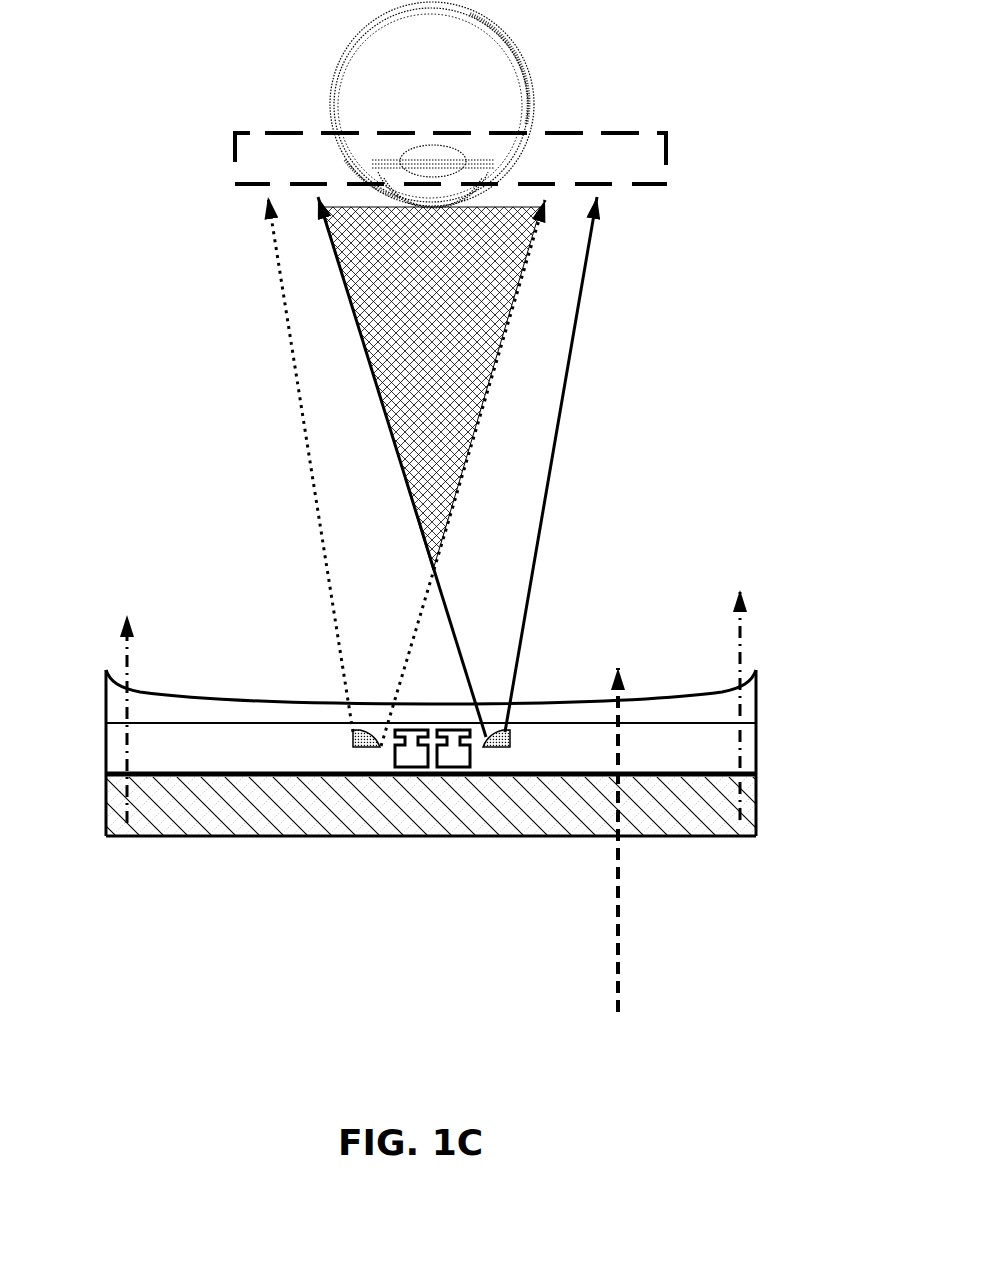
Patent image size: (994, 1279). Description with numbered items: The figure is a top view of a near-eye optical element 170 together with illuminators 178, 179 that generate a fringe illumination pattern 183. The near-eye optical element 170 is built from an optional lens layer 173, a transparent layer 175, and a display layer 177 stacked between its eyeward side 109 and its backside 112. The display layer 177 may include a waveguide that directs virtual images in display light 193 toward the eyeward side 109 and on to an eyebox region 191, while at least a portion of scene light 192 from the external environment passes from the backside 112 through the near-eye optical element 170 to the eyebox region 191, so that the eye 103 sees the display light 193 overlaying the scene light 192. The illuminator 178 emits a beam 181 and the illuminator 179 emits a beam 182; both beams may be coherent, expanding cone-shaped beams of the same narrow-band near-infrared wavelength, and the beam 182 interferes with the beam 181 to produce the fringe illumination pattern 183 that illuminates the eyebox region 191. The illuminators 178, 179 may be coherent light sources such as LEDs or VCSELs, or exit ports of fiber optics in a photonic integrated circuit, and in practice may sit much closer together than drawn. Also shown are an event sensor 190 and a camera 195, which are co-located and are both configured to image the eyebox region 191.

The eye 103 is at (522, 72).
The eyebox region 191 is at (670, 138).
The fringe illumination pattern 183 is at (443, 305).
The beam 181 is at (433, 575).
The beam 182 is at (532, 575).
The eyeward side 109 is at (661, 536).
The display light 193 is at (448, 677).
The scene light 192 is at (615, 869).
The backside 112 is at (257, 935).
The near-eye optical element 170 is at (439, 753).
The lens layer 173 is at (762, 670).
The transparent layer 175 is at (762, 723).
The display layer 177 is at (762, 773).
The illuminator 178 is at (353, 742).
The illuminator 179 is at (511, 737).
The event sensor 190 is at (395, 758).
The camera 195 is at (470, 760).